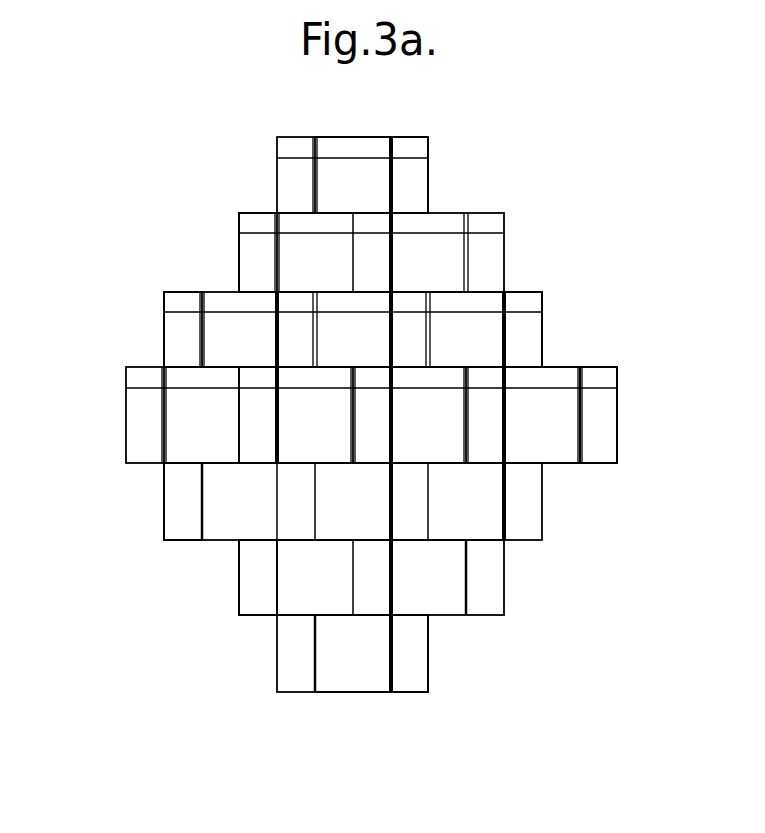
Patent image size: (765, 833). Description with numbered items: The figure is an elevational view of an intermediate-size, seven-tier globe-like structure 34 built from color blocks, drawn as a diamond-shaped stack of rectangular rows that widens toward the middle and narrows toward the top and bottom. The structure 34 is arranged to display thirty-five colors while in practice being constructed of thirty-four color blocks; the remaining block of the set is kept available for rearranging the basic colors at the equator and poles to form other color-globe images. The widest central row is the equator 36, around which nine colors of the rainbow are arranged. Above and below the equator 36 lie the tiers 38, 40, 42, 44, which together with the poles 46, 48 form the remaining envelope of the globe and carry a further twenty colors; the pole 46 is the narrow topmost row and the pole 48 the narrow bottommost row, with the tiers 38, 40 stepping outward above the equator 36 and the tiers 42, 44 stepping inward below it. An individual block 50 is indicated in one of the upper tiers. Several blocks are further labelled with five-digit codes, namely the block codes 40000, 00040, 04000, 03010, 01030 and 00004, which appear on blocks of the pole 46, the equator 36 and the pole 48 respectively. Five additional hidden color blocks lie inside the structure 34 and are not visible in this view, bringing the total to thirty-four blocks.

The globe-like structure 34 is at (572, 230).
The equator 36 is at (638, 427).
The tier 38 is at (222, 250).
The tier 40 is at (146, 330).
The tier 42 is at (145, 500).
The tier 44 is at (225, 585).
The pole 46 is at (420, 173).
The pole 48 is at (428, 660).
The tile 50 is at (528, 330).
The tile code 40000 is at (348, 180).
The tile code 00040 is at (563, 400).
The tile code 04000 is at (183, 408).
The tile code 03010 is at (320, 435).
The tile code 01030 is at (433, 435).
The tile code 00004 is at (349, 664).